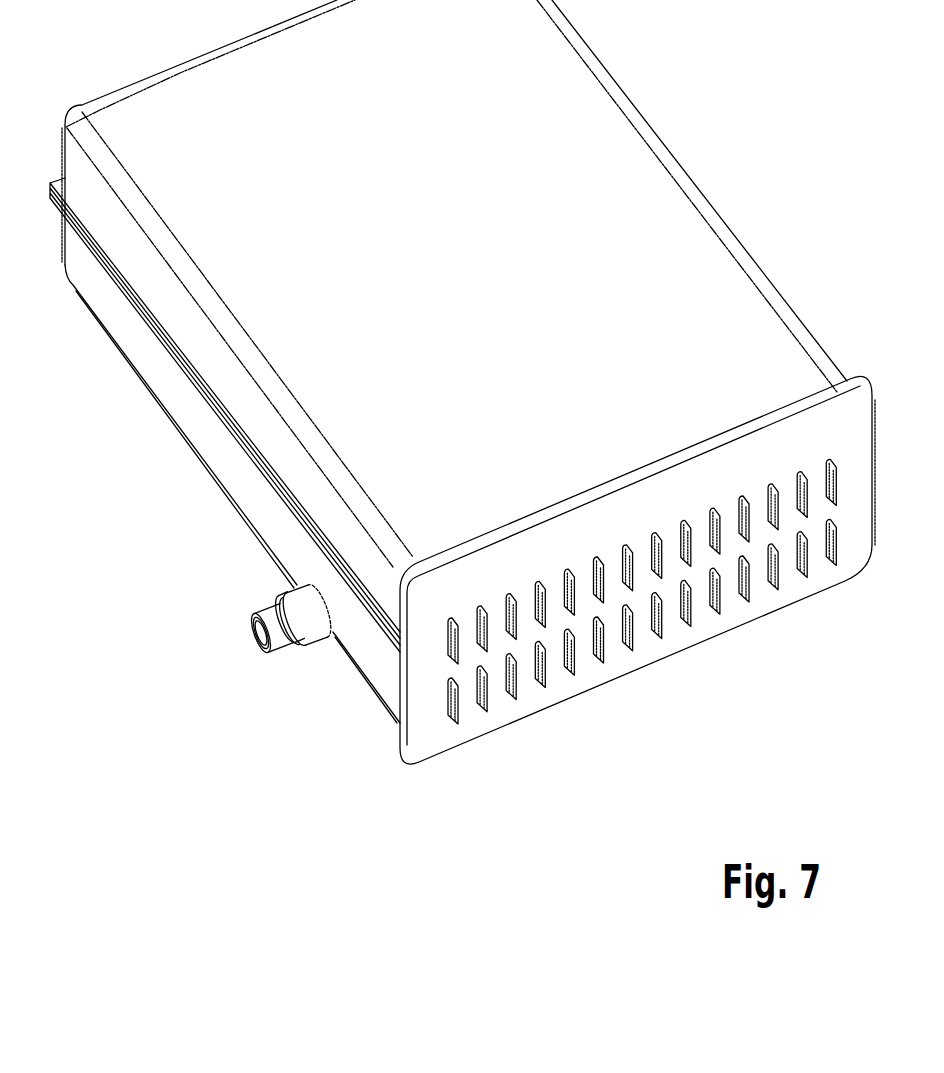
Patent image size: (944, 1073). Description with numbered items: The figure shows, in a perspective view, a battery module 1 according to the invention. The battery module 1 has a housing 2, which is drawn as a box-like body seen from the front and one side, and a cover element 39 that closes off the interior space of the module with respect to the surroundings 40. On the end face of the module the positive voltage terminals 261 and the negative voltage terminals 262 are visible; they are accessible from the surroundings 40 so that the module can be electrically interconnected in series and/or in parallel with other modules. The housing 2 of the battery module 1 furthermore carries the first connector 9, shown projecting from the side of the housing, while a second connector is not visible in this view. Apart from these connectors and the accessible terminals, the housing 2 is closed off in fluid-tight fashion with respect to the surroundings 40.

The battery module 1 is at (150, 745).
The housing 2 is at (632, 135).
The first connector 9 is at (282, 642).
The cover element 39 is at (649, 653).
The surroundings 40 is at (594, 597).
The positive voltage terminals 261 is at (452, 646).
The negative voltage terminals 262 is at (453, 721).